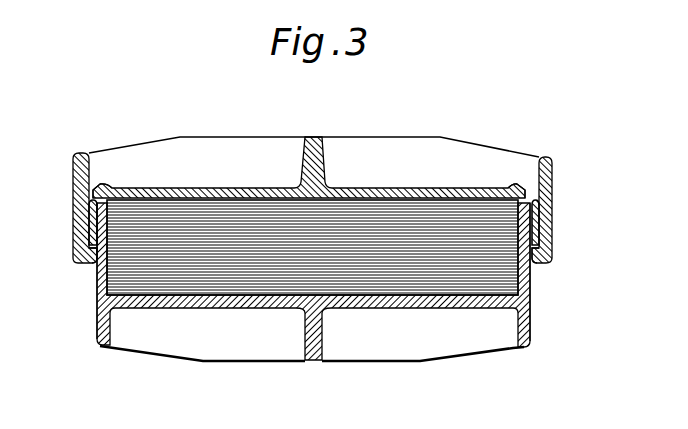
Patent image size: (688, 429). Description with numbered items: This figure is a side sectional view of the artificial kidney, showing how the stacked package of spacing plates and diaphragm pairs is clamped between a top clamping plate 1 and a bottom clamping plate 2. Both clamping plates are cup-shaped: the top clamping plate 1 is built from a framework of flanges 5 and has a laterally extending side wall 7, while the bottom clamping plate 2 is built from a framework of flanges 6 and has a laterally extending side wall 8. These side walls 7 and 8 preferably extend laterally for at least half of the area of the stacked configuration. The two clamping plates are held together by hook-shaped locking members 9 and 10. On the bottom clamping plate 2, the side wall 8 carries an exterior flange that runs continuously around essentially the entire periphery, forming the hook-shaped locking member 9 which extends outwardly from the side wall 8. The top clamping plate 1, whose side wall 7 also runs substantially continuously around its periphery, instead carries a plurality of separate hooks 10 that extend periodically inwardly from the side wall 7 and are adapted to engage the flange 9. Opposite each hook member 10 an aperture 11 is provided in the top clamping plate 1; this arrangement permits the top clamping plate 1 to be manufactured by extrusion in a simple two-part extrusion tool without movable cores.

The top clamping plate 1 is at (462, 162).
The bottom clamping plate 2 is at (416, 333).
The flanges 5 is at (302, 183).
The flanges 6 is at (165, 332).
The side wall 7 is at (553, 228).
The side wall 8 is at (532, 274).
The hook-shaped locking member 9 is at (90, 233).
The hooks 10 is at (76, 256).
The aperture 11 is at (91, 190).